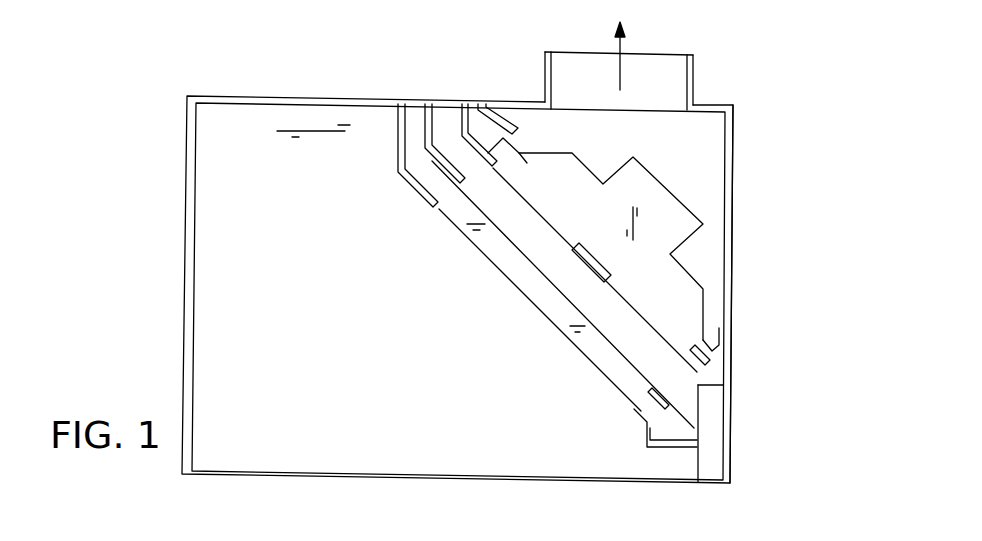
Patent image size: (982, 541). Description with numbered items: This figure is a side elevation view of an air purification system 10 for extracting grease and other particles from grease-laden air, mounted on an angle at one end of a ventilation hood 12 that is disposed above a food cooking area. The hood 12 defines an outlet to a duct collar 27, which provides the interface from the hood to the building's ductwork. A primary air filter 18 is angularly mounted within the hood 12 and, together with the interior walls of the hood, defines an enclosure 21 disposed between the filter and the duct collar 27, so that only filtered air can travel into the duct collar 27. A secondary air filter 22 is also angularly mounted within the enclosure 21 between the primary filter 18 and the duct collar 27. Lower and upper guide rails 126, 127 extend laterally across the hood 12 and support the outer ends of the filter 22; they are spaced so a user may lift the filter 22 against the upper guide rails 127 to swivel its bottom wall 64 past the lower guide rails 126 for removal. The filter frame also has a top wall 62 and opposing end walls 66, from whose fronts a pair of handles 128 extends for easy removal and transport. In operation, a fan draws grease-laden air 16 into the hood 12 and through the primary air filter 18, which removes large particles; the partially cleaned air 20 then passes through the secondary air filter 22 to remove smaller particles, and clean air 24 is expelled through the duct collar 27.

The air purification system 10 is at (780, 84).
The ventilation hood 12 is at (320, 93).
The grease-laden air 16 is at (567, 378).
The primary air filter 18 is at (449, 232).
The partially cleaned air 20 is at (547, 231).
The enclosure 21 is at (708, 140).
The secondary air filter 22 is at (600, 164).
The clean air 24 is at (618, 71).
The duct collar 27 is at (695, 79).
The top wall 62 is at (513, 164).
The bottom wall 64 is at (710, 362).
The end walls 66 is at (660, 286).
The lower guide rails 126 is at (478, 140).
The upper guide rails 127 is at (513, 103).
The handles 128 is at (577, 283).